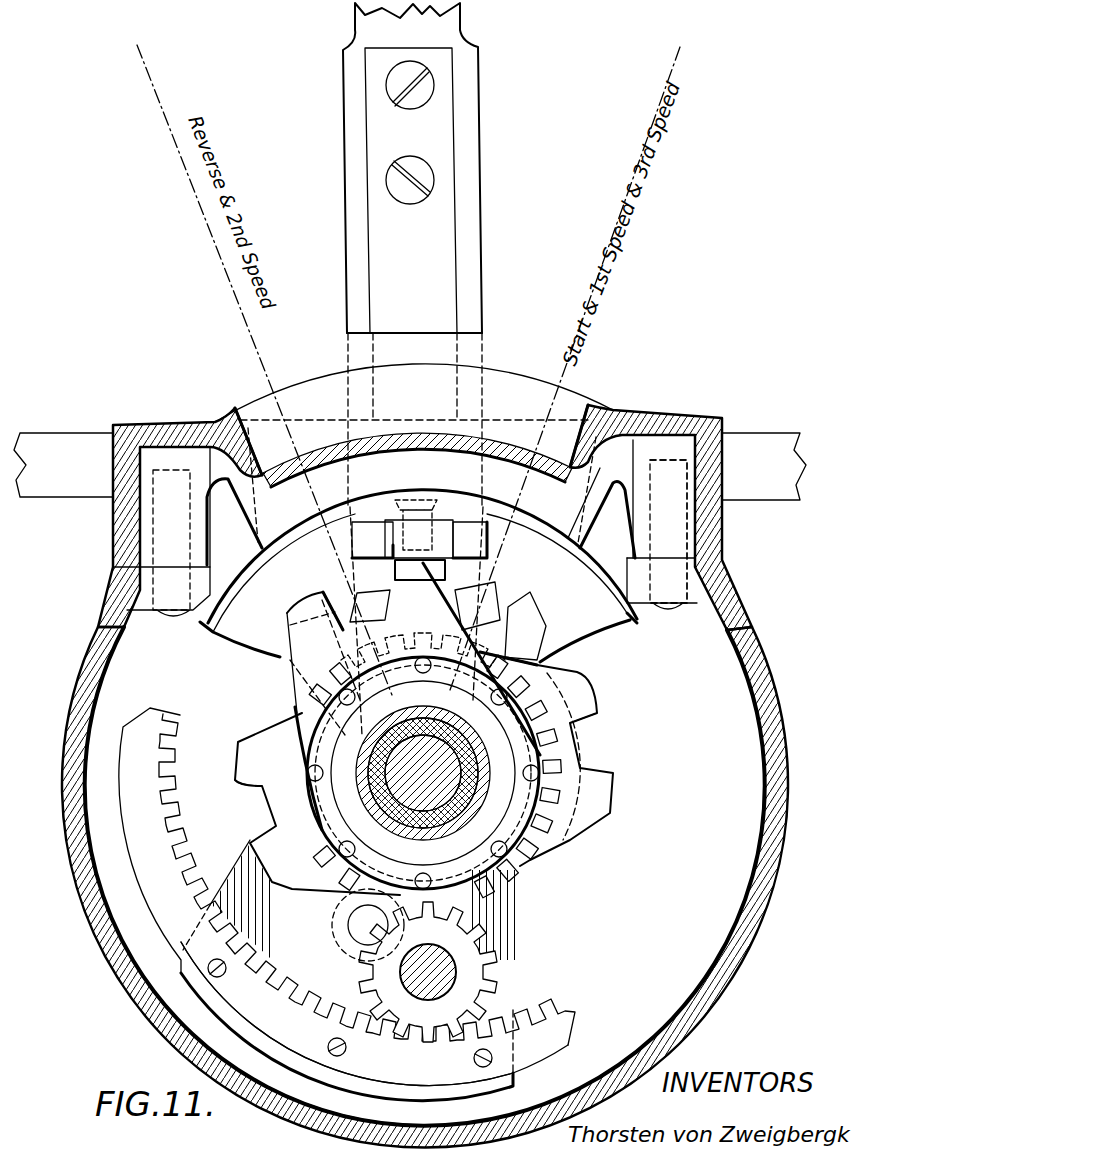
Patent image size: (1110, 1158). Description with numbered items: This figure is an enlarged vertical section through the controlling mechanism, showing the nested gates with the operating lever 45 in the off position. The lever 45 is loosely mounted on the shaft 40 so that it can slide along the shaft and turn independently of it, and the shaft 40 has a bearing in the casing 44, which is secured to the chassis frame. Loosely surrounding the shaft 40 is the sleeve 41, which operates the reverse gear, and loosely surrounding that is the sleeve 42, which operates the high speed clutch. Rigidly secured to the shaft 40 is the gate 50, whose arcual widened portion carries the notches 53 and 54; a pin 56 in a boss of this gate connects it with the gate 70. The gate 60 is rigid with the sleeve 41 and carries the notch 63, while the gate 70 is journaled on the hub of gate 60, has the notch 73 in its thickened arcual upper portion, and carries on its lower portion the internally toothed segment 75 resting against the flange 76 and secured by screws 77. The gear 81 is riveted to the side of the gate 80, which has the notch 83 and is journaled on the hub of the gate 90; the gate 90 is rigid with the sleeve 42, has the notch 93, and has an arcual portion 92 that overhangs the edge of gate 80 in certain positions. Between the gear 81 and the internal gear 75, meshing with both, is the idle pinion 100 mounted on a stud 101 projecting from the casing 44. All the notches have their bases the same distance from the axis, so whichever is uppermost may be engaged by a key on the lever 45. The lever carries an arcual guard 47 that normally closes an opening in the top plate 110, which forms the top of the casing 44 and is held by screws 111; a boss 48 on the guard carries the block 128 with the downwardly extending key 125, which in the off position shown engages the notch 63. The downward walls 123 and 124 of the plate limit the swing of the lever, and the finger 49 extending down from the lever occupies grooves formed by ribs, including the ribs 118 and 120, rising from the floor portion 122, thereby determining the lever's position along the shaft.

The shaft 40 is at (385, 790).
The sleeve 41 is at (390, 818).
The sleeve 42 is at (415, 835).
The casing 44 is at (765, 800).
The operating lever 45 is at (478, 172).
The arcual guard 47 is at (590, 575).
The boss 48 is at (436, 529).
The finger 49 is at (411, 190).
The gate 50 is at (546, 759).
The notch 53 is at (423, 641).
The notch 54 is at (600, 718).
The pin 56 is at (368, 925).
The gate 60 is at (425, 606).
The notch 63 is at (485, 595).
The gate 70 is at (411, 773).
The notch 73 is at (505, 605).
The internally toothed segment 75 is at (347, 904).
The flange 76 is at (438, 1082).
The screws 77 is at (328, 1044).
The gate 80 is at (291, 828).
The gear 81 is at (515, 882).
The notch 83 is at (255, 795).
The gate 90 is at (583, 852).
The arcual portion 92 is at (288, 618).
The notch 93 is at (418, 573).
The idle pinion 100 is at (500, 958).
The stud 101 is at (420, 972).
The top plate 110 is at (730, 470).
The screws 111 is at (655, 528).
The rib 118 is at (578, 400).
The rib 120 is at (336, 375).
The floor portion 122 is at (417, 460).
The downward wall 123 is at (593, 496).
The downward wall 124 is at (250, 500).
The key 125 is at (440, 572).
The block 128 is at (393, 548).